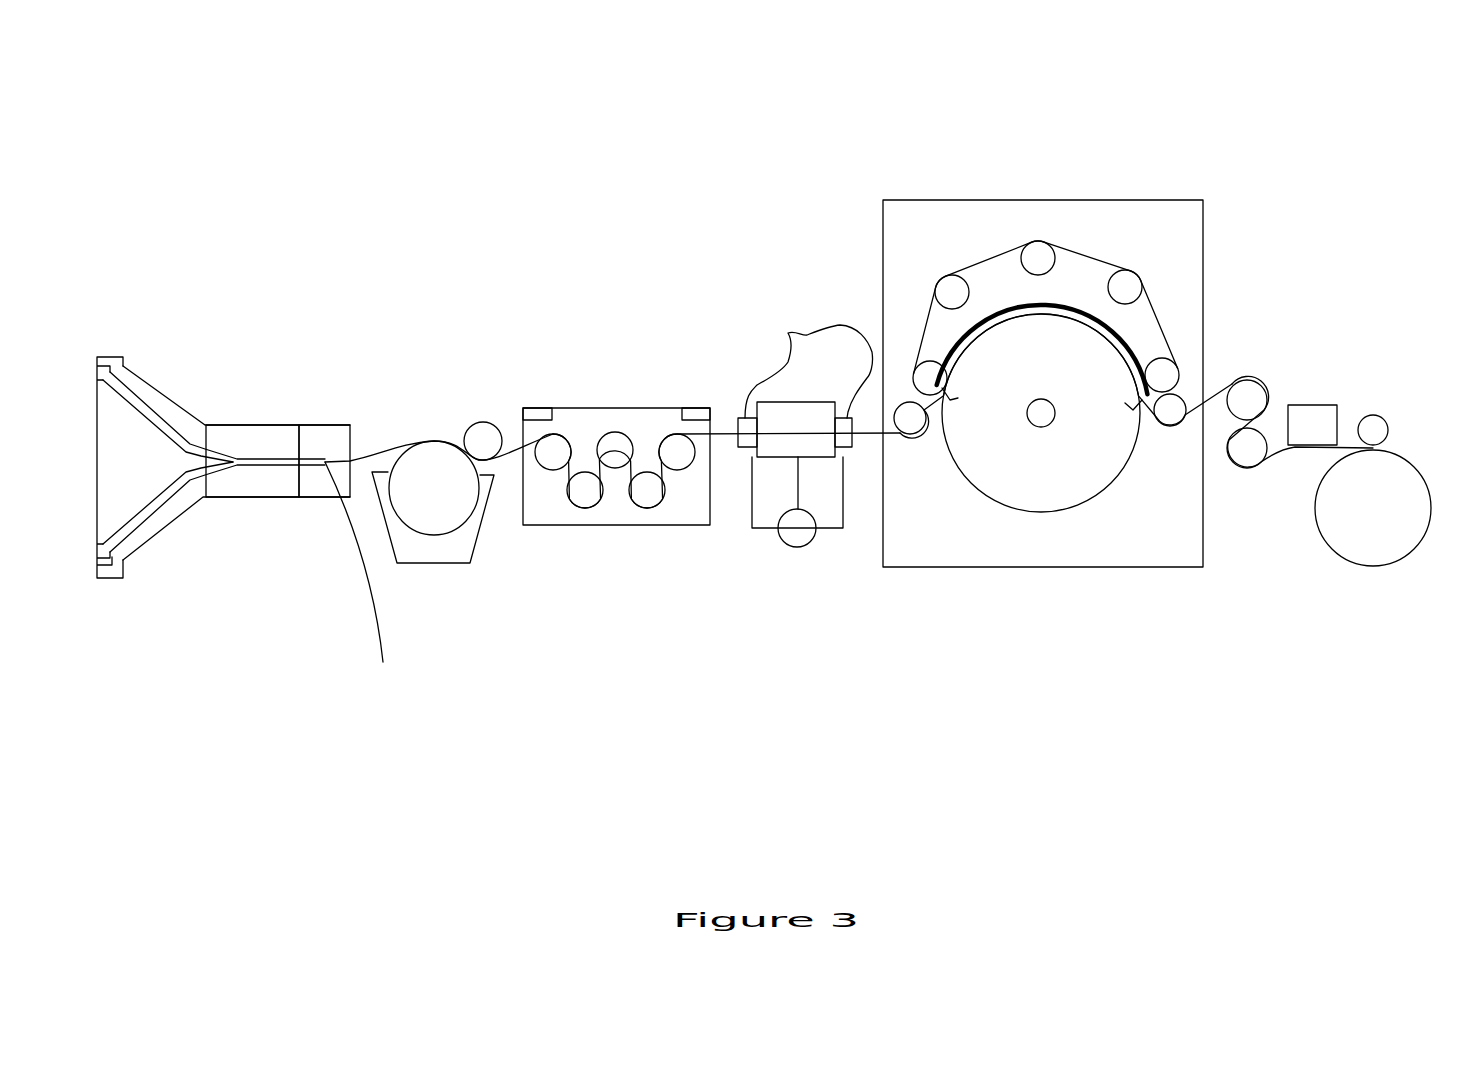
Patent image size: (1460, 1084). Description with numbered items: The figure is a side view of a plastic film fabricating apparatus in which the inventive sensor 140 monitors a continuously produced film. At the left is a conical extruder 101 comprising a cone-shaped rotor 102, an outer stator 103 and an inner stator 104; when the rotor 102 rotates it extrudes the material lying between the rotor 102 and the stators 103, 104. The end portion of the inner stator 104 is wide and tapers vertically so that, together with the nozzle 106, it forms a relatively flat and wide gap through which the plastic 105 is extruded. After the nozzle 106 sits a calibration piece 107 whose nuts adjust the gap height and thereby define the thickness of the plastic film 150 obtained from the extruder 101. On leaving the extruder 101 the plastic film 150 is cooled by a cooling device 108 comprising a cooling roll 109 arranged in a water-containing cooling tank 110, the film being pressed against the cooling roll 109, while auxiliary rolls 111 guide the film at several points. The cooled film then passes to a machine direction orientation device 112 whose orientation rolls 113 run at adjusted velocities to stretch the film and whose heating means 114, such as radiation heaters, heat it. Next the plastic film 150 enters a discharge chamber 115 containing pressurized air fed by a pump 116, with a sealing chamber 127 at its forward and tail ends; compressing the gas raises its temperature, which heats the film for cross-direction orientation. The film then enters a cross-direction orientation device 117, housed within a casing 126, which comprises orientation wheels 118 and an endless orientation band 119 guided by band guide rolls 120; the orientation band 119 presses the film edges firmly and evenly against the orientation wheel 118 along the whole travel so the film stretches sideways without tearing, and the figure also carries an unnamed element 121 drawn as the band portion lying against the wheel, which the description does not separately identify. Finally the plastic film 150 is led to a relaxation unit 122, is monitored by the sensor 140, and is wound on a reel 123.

The conical extruder 101 is at (243, 471).
The cone-shaped rotor 102 is at (127, 377).
The outer stator 103 is at (122, 358).
The inner stator 104 is at (113, 518).
The plastic 105 is at (366, 577).
The nozzle 106 is at (260, 440).
The calibration piece 107 is at (318, 430).
The cooling device 108 is at (453, 485).
The cooling roll 109 is at (433, 523).
The cooling tank 110 is at (455, 552).
The auxiliary rolls 111 is at (910, 400).
The machine direction orientation device 112 is at (711, 395).
The orientation rolls 113 is at (612, 438).
The heating means 114 is at (538, 412).
The discharge chamber 115 is at (790, 412).
The pump 116 is at (800, 548).
The cross-direction orientation device 117 is at (1061, 350).
The orientation wheels 118 is at (1018, 475).
The orientation band 119 is at (1083, 252).
The band guide rolls 120 is at (947, 276).
The belt contact band 121 is at (1110, 335).
The relaxation unit 122 is at (1285, 373).
The reel 123 is at (1363, 567).
The casing 126 is at (1162, 552).
The sealing chamber 127 is at (809, 360).
The sensor 140 is at (1312, 425).
The plastic film 150 is at (373, 452).